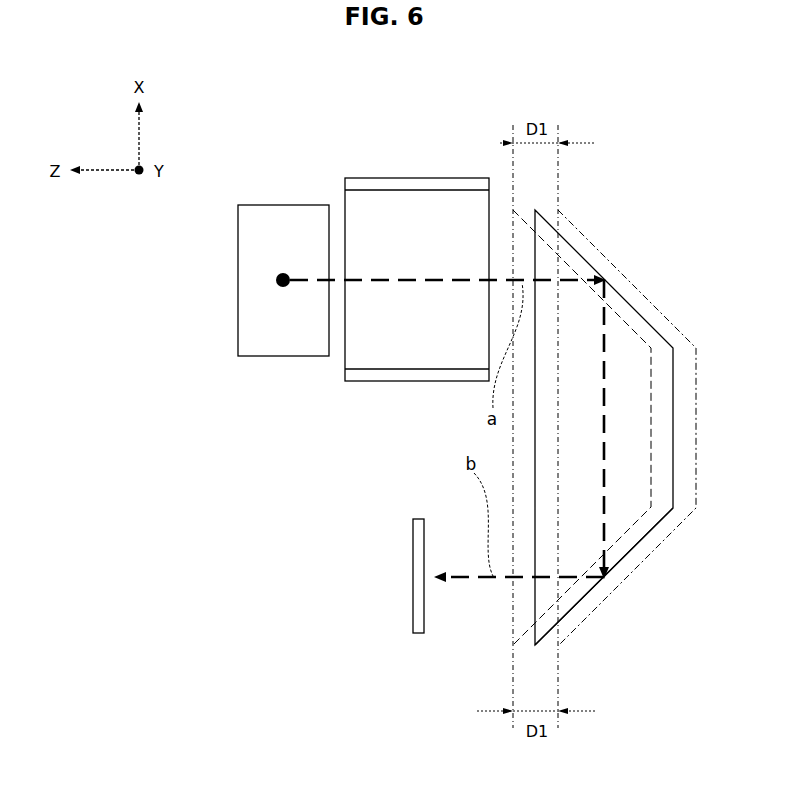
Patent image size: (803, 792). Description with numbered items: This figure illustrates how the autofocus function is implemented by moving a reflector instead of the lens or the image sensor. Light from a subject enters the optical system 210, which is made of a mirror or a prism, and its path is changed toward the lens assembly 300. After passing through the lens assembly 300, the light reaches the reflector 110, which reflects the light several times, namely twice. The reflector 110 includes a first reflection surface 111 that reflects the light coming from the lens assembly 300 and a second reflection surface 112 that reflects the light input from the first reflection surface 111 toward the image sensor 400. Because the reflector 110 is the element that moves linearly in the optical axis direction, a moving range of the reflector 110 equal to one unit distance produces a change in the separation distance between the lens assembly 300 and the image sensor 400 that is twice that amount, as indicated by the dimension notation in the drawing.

The optical system 210 is at (279, 217).
The lens assembly 300 is at (393, 208).
The reflector 110 is at (616, 421).
The first reflection surface 111 is at (585, 253).
The second reflection surface 112 is at (640, 543).
The image sensor 400 is at (412, 607).